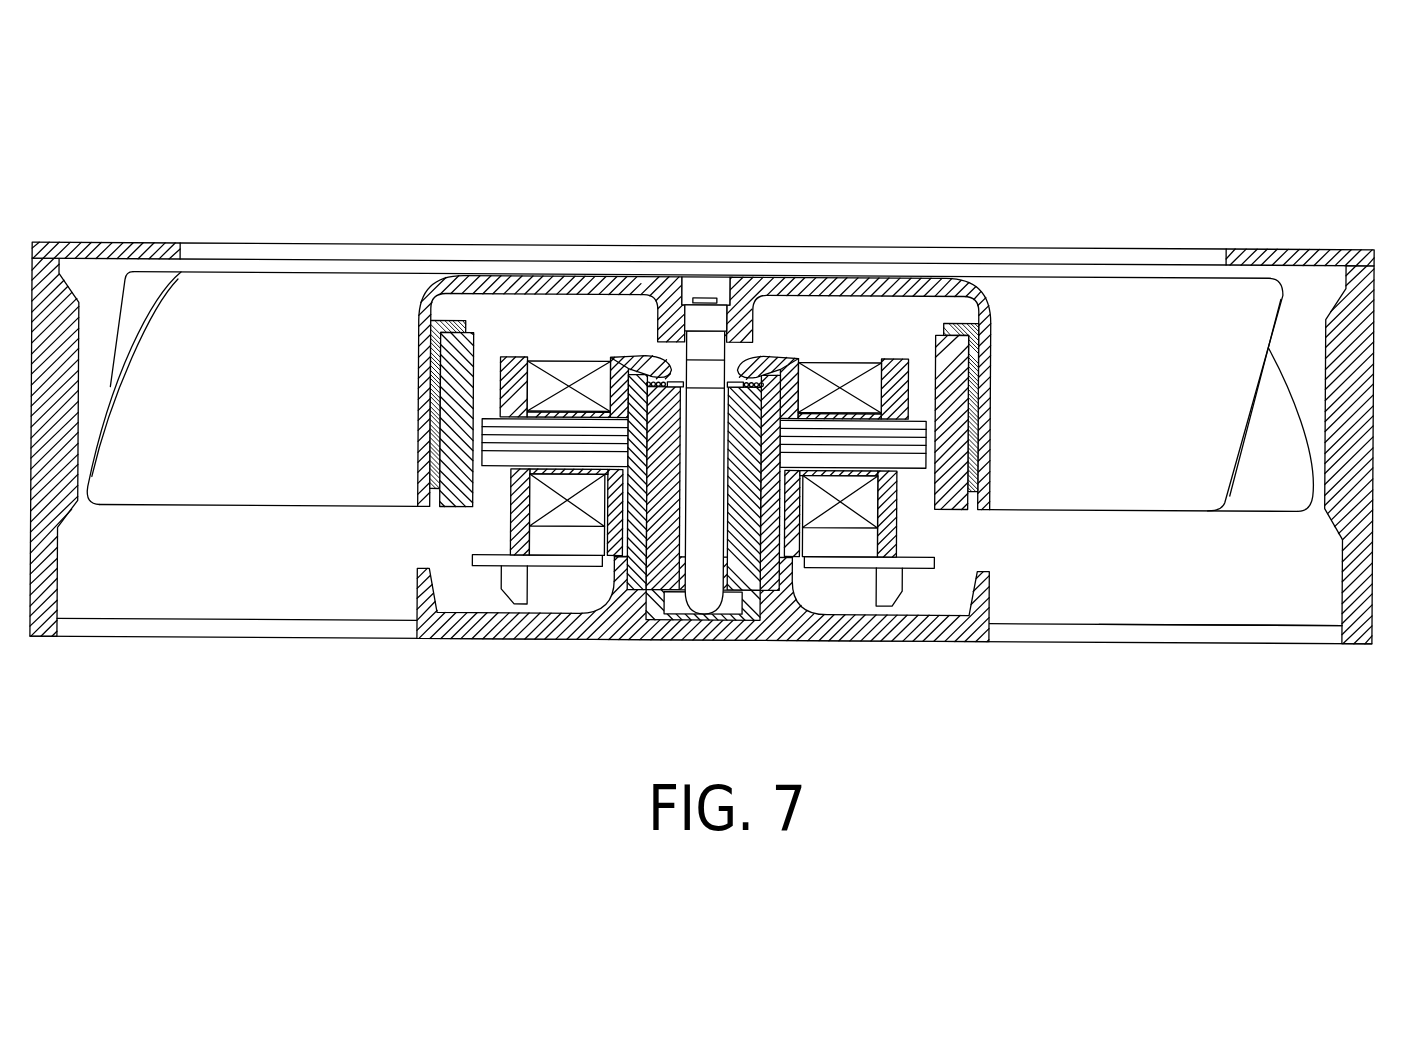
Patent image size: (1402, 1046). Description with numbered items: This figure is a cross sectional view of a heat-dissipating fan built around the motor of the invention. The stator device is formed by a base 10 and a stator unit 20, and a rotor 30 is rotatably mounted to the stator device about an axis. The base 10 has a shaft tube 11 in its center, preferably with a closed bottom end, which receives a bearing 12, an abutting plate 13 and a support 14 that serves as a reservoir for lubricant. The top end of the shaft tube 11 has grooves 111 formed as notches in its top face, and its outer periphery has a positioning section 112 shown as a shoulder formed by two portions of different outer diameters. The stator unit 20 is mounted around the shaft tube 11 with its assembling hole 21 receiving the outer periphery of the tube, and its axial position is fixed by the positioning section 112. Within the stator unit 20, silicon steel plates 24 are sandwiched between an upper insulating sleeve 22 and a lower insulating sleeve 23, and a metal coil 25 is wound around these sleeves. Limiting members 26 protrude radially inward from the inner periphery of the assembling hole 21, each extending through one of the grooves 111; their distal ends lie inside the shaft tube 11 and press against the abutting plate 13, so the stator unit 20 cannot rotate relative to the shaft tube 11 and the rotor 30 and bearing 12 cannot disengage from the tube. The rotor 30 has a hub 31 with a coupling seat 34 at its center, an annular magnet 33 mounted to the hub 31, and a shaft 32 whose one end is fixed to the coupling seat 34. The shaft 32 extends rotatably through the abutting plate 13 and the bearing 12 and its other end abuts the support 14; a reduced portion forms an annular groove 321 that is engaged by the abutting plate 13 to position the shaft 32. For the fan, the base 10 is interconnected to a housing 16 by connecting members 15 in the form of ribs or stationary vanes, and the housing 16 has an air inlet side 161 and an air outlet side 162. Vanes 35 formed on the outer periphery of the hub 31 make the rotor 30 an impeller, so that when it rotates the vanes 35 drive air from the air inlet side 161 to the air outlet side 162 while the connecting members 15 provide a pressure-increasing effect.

The base 10 is at (977, 628).
The shaft tube 11 is at (627, 528).
The bearing 12 is at (662, 569).
The abutting plate 13 is at (672, 373).
The support 14 is at (748, 610).
The connecting members 15 is at (1176, 632).
The housing 16 is at (1362, 630).
The air inlet side 161 is at (1142, 228).
The air outlet side 162 is at (1125, 616).
The stator unit 20 is at (923, 565).
The assembling hole 21 is at (802, 365).
The upper insulating sleeve 22 is at (892, 359).
The lower insulating sleeve 23 is at (898, 525).
The silicon steel plates 24 is at (490, 427).
The metal coil 25 is at (855, 370).
The limiting members 26 is at (655, 357).
The rotor 30 is at (988, 363).
The hub 31 is at (873, 283).
The shaft 32 is at (707, 570).
The annular groove 321 is at (702, 373).
The annular magnet 33 is at (453, 499).
The coupling seat 34 is at (740, 380).
The vanes 35 is at (1190, 297).
The grooves 111 is at (632, 356).
The positioning section 112 is at (620, 481).